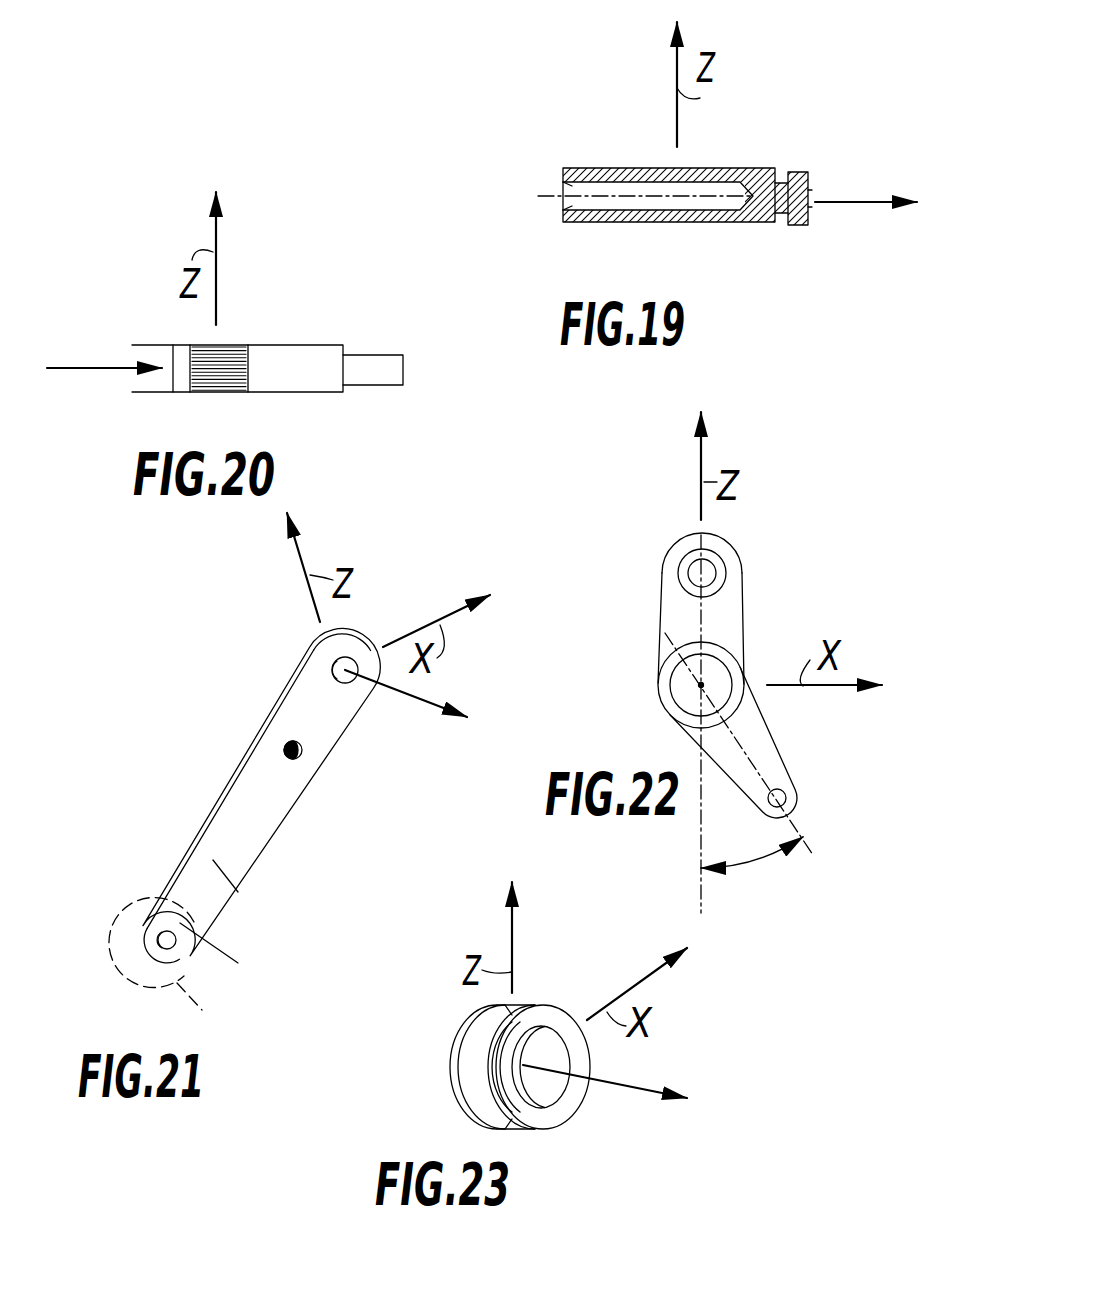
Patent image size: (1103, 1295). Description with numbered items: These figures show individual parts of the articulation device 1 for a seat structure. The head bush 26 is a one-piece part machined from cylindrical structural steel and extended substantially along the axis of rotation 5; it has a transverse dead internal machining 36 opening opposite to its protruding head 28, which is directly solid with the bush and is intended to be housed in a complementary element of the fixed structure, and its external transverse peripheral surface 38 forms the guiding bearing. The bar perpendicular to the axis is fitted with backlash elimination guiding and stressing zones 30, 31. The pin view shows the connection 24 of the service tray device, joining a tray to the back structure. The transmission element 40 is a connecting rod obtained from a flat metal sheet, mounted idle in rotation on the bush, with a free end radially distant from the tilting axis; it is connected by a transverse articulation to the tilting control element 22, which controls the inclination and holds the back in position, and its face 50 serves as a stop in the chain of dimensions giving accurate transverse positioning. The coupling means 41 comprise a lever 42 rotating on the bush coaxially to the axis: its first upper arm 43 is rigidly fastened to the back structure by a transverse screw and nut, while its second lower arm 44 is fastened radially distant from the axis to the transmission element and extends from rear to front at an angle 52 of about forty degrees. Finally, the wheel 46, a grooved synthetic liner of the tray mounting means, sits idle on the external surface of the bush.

In FIG. 19, the articulation device 1 is at (683, 176).
In FIG. 20, the articulation device 1 is at (240, 327).
In FIG. 21, the articulation device 1 is at (232, 834).
In FIG. 22, the articulation device 1 is at (726, 674).
In FIG. 23, the articulation device 1 is at (487, 1089).
In FIG. 19, the axis of rotation 5 is at (835, 157).
In FIG. 20, the axis of rotation 5 is at (62, 370).
In FIG. 21, the axis of rotation 5 is at (383, 688).
In FIG. 22, the axis of rotation 5 is at (678, 683).
In FIG. 23, the axis of rotation 5 is at (640, 1102).
In FIG. 21, the tilting control element 22 is at (170, 1012).
In FIG. 20, the connection 24 is at (272, 373).
In FIG. 19, the transversal bush 26 is at (683, 176).
In FIG. 19, the protruding head 28 is at (807, 210).
In FIG. 19, the backlash elimination guiding and stressing zone 30 is at (797, 226).
In FIG. 19, the backlash elimination guiding and stressing zone 31 is at (798, 172).
In FIG. 19, the transverse dead internal machining 36 is at (578, 188).
In FIG. 19, the external transverse peripheral surface 38 is at (662, 223).
In FIG. 21, the transmission element 40 is at (268, 796).
In FIG. 22, the coupling means 41 is at (738, 705).
In FIG. 22, the lever 42 is at (743, 679).
In FIG. 22, the first upper arm 43 is at (687, 612).
In FIG. 22, the second lower arm 44 is at (762, 740).
In FIG. 23, the wheel 46 is at (545, 1113).
In FIG. 21, the face 50 is at (238, 892).
In FIG. 22, the angle 52 is at (745, 862).